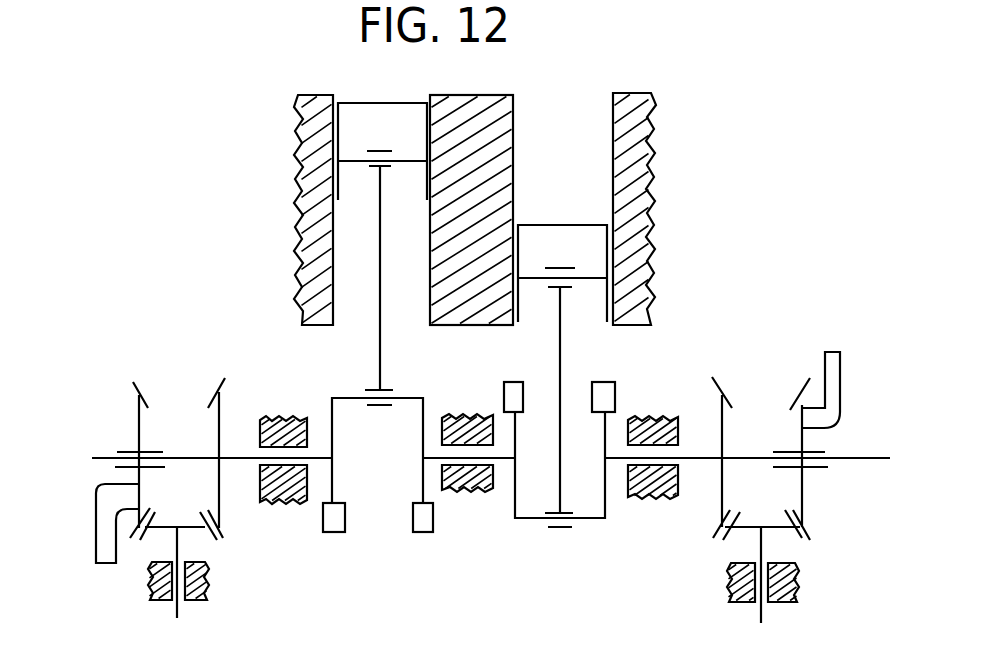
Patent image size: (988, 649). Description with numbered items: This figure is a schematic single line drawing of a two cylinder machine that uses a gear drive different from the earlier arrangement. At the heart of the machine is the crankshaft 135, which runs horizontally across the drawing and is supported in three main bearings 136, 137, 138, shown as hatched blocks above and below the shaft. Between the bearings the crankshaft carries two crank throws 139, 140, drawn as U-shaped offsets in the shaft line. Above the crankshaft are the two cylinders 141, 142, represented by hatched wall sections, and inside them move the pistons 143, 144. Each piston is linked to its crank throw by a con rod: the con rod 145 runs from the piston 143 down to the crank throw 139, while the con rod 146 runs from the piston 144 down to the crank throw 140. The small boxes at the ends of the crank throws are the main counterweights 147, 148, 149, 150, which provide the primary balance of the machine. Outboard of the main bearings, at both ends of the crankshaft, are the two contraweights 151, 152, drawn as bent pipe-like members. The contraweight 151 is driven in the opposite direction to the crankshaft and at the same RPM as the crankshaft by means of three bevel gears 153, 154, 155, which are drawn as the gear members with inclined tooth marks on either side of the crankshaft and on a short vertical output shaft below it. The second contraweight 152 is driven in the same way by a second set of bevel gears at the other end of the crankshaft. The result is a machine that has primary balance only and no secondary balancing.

The crankshaft 135 is at (872, 457).
The main bearing 136 is at (288, 420).
The main bearing 137 is at (470, 491).
The main bearing 138 is at (652, 497).
The crank throw 139 is at (410, 398).
The crank throw 140 is at (531, 519).
The cylinder 141 is at (333, 256).
The cylinder 142 is at (613, 149).
The piston 143 is at (382, 103).
The piston 144 is at (563, 224).
The con rod 145 is at (379, 340).
The con rod 146 is at (562, 345).
The main counterweight 147 is at (335, 532).
The main counterweight 148 is at (425, 532).
The main counterweight 149 is at (515, 390).
The main counterweight 150 is at (607, 398).
The contraweight 151 is at (103, 541).
The contraweight 152 is at (833, 372).
The bevel gear 153 is at (220, 488).
The bevel gear 154 is at (192, 538).
The bevel gear 155 is at (139, 417).